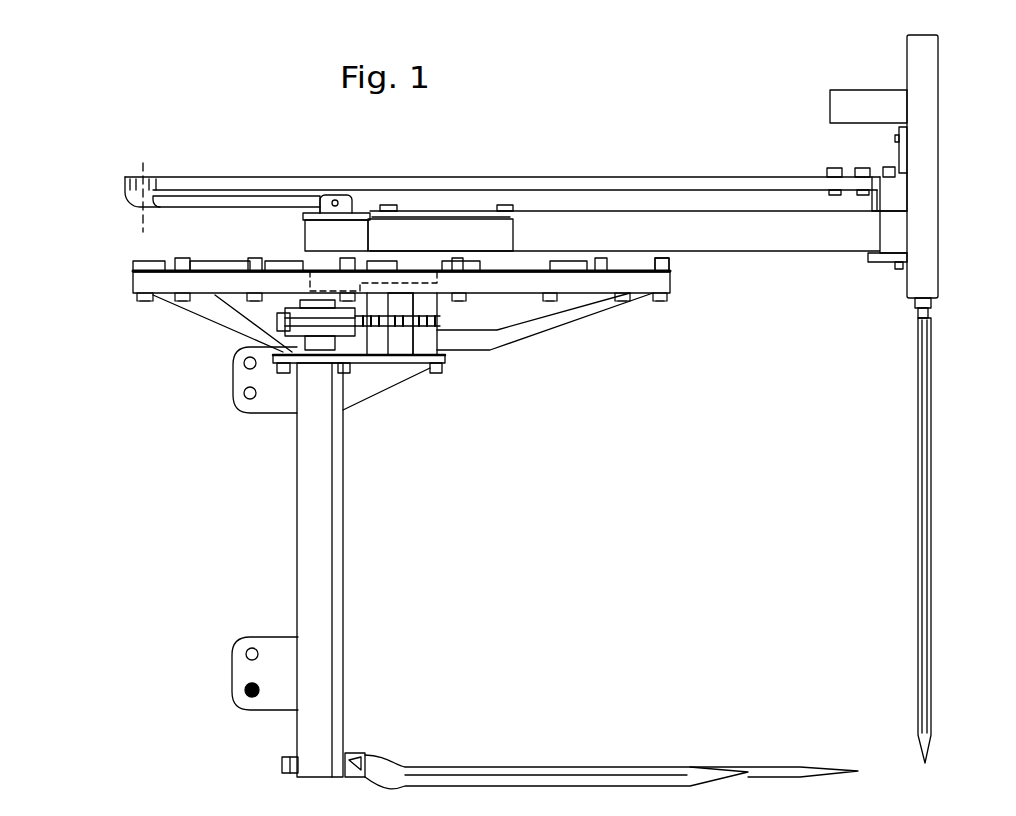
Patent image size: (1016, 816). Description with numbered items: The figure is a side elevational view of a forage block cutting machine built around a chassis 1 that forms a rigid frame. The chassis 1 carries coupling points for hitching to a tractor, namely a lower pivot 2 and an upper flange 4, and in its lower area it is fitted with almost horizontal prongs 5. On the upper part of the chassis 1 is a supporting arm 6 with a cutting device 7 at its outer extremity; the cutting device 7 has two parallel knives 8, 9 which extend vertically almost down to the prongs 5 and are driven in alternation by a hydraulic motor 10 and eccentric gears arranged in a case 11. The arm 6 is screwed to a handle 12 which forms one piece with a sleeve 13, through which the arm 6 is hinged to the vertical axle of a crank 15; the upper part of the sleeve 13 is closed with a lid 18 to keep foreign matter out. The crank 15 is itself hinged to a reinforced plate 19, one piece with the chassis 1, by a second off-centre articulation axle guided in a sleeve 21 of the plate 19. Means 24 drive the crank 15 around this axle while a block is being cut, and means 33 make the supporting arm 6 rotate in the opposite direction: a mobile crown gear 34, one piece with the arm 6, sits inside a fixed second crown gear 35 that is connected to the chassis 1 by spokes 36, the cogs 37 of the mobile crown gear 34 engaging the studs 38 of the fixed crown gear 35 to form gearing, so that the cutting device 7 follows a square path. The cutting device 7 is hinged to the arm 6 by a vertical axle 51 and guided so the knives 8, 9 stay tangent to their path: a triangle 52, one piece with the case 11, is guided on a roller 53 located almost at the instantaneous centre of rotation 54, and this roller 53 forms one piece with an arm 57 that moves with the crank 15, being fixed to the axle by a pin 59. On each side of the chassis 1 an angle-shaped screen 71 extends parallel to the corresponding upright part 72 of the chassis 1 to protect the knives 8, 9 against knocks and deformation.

The chassis 1 is at (297, 510).
The lower pivot 2 is at (250, 690).
The upper flange 4 is at (240, 385).
The prongs 5 is at (615, 775).
The arm 6 is at (777, 238).
The cutting device 7 is at (943, 253).
The knife 8 is at (931, 428).
The knife 9 is at (918, 441).
The hydraulic motor 10 is at (858, 97).
The case 11 is at (935, 108).
The handle 12 is at (432, 227).
The sleeve 13 is at (357, 230).
The crank 15 is at (433, 307).
The lid 18 is at (310, 213).
The reinforced plate 19 is at (412, 363).
The sleeve 21 is at (380, 345).
The means to drive the crank 24 is at (267, 327).
The means to rotate the supporting arm 33 is at (155, 262).
The mobile crown gear 34 is at (190, 259).
The second crown gear 35 is at (590, 283).
The spokes 36 is at (540, 327).
The cogs 37 is at (277, 263).
The studs 38 is at (668, 266).
The vertical axle 51 is at (883, 167).
The triangle 52 is at (618, 180).
The roller 53 is at (125, 184).
The instantaneous centre of rotation 54 is at (143, 172).
The arm 57 is at (232, 200).
The pin 59 is at (335, 200).
The screen 71 is at (315, 593).
The upright part 72 is at (340, 503).